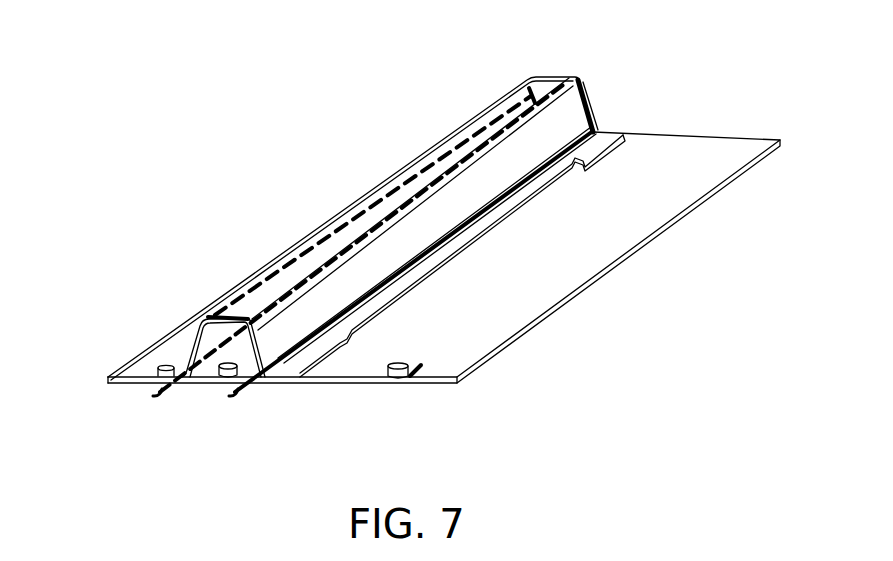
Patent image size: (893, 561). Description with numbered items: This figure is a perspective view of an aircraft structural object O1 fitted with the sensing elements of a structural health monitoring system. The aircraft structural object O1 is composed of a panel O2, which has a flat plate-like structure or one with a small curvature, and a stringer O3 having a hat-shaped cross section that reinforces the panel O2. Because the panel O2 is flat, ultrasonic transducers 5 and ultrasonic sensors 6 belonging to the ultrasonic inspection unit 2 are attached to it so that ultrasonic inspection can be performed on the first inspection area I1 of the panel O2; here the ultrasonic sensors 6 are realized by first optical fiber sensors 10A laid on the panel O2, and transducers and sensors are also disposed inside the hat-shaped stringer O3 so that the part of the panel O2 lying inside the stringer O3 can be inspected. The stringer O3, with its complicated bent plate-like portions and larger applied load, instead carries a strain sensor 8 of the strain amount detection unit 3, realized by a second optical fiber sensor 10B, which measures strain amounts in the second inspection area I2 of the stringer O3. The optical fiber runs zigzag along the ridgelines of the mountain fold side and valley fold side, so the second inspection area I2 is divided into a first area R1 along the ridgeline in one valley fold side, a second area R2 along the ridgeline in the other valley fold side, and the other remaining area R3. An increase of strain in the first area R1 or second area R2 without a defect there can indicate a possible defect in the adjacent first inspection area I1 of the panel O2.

The ultrasonic inspection unit 2 is at (383, 372).
The strain amount detection unit 3 is at (577, 81).
The ultrasonic transducers 5 is at (393, 381).
The ultrasonic sensors 6 is at (404, 380).
The strain sensor 8 is at (596, 120).
The first optical fiber sensors 10A is at (691, 151).
The second optical fiber sensor 10B is at (585, 97).
The first inspection area I1 is at (588, 240).
The second inspection area I2 is at (383, 207).
The aircraft structural object O1 is at (63, 278).
The panel O2 is at (138, 362).
The stringer O3 is at (201, 321).
The first area R1 is at (288, 372).
The second area R2 is at (178, 366).
The other remaining area R3 is at (233, 312).